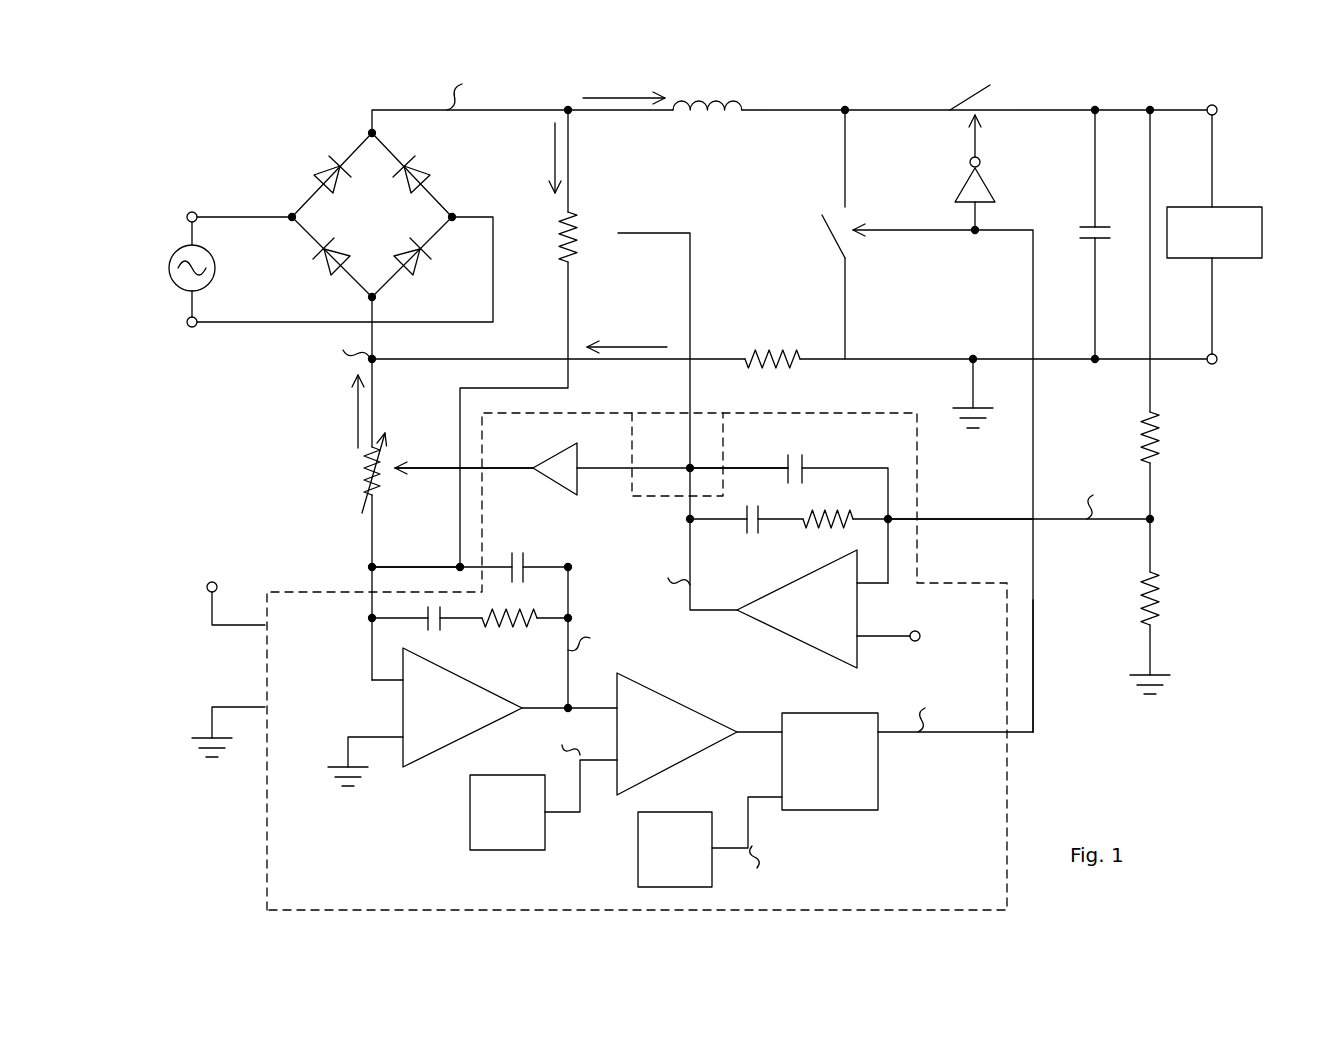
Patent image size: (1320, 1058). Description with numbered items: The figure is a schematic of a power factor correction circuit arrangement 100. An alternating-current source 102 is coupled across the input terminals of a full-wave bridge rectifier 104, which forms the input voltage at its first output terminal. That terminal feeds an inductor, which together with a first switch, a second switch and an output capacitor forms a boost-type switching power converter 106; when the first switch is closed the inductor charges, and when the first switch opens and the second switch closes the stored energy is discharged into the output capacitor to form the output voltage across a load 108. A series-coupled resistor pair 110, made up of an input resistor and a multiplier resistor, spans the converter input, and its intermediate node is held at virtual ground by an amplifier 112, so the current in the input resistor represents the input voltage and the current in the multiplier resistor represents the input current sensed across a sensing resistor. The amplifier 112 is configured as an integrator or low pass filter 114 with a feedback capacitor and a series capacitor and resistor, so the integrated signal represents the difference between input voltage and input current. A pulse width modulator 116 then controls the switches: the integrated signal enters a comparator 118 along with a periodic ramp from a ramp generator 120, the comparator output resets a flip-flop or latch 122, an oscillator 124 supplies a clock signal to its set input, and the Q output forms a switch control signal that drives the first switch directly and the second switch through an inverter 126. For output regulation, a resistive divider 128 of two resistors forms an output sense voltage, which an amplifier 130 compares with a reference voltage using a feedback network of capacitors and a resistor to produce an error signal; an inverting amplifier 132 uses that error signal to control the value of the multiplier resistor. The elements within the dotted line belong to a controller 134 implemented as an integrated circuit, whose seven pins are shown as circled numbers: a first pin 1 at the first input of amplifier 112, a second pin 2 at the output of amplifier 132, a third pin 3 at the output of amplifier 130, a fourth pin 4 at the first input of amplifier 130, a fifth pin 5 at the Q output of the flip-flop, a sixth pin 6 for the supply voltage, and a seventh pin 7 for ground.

The power factor correction circuit arrangement 100 is at (263, 106).
The alternating-current source 102 is at (215, 268).
The full-wave bridge rectifier 104 is at (389, 232).
The boost-type switching power converter 106 is at (917, 146).
The load 108 is at (1212, 207).
The series-coupled resistor pair 110 is at (553, 277).
The amplifier 112 is at (410, 770).
The integrator or low pass filter 114 is at (545, 693).
The pulse width modulator 116 is at (730, 696).
The comparator 118 is at (617, 690).
The ramp generator 120 is at (470, 828).
The flip-flop or latch 122 is at (860, 810).
The oscillator 124 is at (685, 812).
The inverter 126 is at (990, 185).
The resistive divider 128 is at (1163, 470).
The amplifier 130 is at (822, 650).
The amplifier 132 is at (577, 495).
The controller 134 is at (974, 879).
The first pin 1 is at (372, 567).
The second pin 2 is at (420, 470).
The third pin 3 is at (690, 468).
The fourth pin 4 is at (935, 519).
The fifth pin 5 is at (1033, 728).
The sixth pin 6 is at (212, 612).
The seventh pin 7 is at (212, 712).